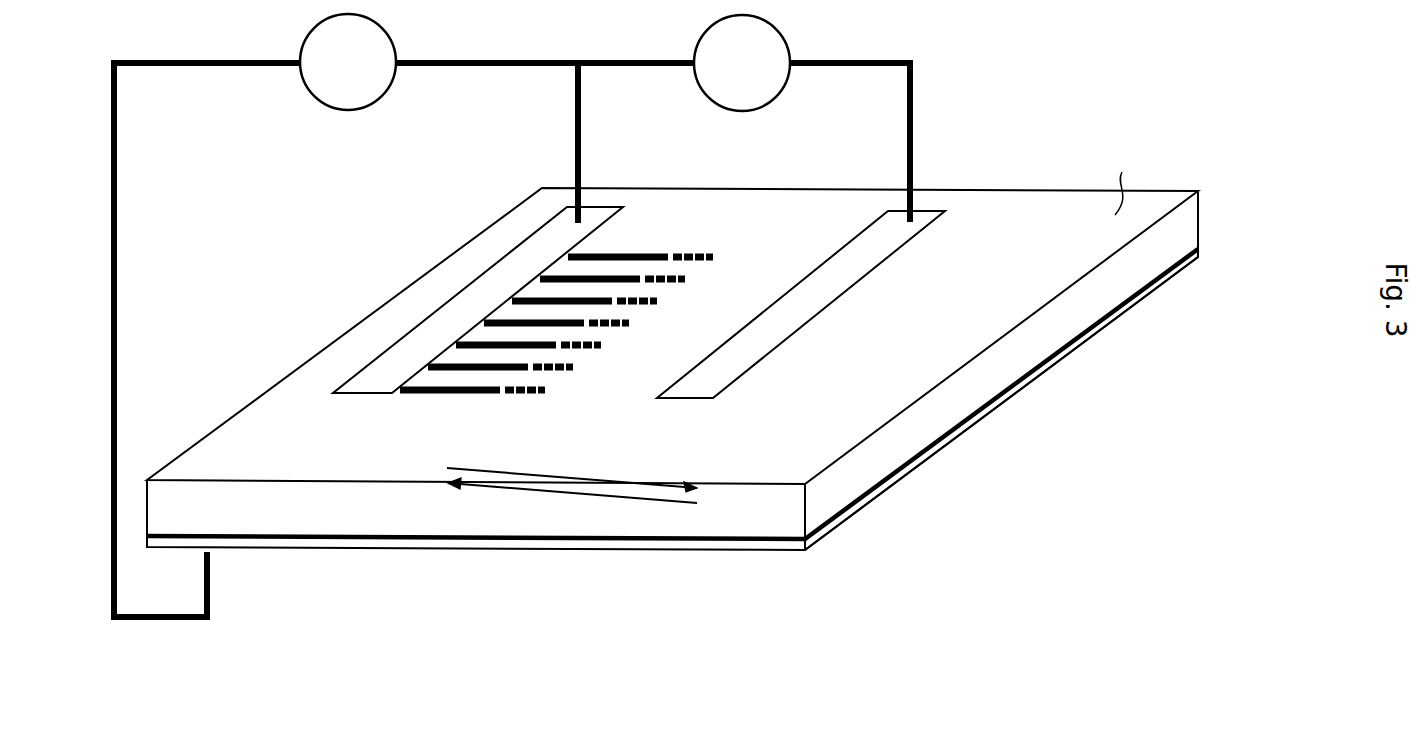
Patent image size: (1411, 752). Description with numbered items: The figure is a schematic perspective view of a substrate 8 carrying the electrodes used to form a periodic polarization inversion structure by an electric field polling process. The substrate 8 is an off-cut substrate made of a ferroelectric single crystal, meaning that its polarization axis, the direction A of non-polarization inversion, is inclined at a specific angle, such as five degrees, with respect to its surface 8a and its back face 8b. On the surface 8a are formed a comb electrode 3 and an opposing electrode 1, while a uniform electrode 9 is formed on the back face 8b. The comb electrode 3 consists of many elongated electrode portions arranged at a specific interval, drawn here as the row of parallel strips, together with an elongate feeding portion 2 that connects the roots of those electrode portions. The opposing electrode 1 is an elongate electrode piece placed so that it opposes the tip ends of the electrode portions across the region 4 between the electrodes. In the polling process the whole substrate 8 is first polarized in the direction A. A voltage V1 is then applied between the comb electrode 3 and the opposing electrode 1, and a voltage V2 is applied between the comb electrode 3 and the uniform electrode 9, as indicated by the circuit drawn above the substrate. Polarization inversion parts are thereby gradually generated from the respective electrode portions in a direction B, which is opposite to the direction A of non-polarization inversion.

The opposing electrode 1 is at (827, 290).
The feeding portion 2 is at (518, 263).
The comb electrode 3 is at (610, 383).
The region between electrodes 4 is at (679, 338).
The substrate 8 is at (1168, 232).
The surface 8a is at (1130, 180).
The back face 8b is at (1128, 303).
The uniform electrode 9 is at (928, 460).
The direction of non-polarization inversion A is at (595, 495).
The direction of polarization inversion B is at (660, 483).
The voltage V1 is at (742, 63).
The voltage V2 is at (348, 62).